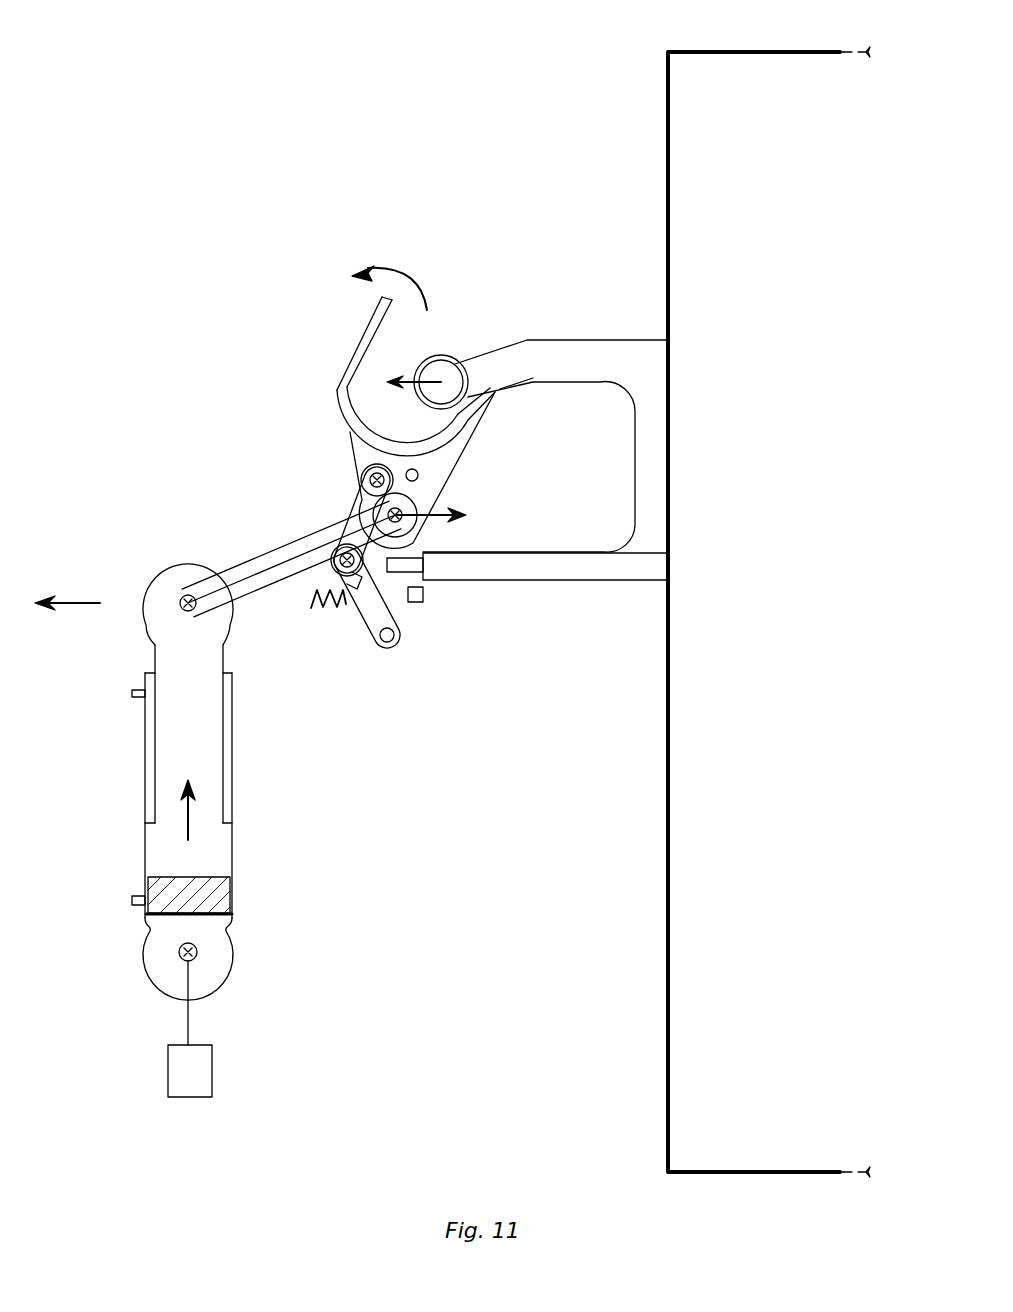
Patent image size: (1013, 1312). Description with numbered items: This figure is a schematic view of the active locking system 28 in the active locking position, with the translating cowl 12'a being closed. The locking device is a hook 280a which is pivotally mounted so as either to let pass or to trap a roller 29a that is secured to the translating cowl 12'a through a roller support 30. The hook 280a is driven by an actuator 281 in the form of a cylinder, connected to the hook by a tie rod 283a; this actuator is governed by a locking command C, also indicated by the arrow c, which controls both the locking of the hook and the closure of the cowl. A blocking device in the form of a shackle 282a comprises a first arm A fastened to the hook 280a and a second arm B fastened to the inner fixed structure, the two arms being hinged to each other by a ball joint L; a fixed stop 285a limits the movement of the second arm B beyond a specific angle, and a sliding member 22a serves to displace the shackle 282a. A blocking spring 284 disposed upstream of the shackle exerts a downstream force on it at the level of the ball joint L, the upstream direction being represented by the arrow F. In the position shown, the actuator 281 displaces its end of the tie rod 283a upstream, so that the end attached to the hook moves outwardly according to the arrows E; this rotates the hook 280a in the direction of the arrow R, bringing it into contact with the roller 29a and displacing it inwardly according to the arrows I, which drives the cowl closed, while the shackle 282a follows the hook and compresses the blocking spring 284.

The translating cowl 12'a is at (769, 591).
The roller support 30 is at (610, 353).
The sliding member 22a is at (405, 566).
The fixed stop 285a is at (424, 603).
The roller 29a is at (455, 377).
The inward displacement arrow I is at (430, 378).
The hook rotation arrow R is at (395, 265).
The locking device 280a is at (458, 440).
The first arm A is at (365, 478).
The outward displacement arrow E is at (432, 510).
The tie rod 283a is at (243, 602).
The blocking device 282a is at (363, 632).
The second arm B is at (390, 646).
The blocking spring 284 is at (332, 608).
The ball joint L is at (345, 530).
The upstream direction arrow F is at (72, 598).
The active locking system 28 is at (258, 506).
The actuator 281 is at (215, 856).
The locking command c is at (182, 830).
The locking command C is at (200, 1064).